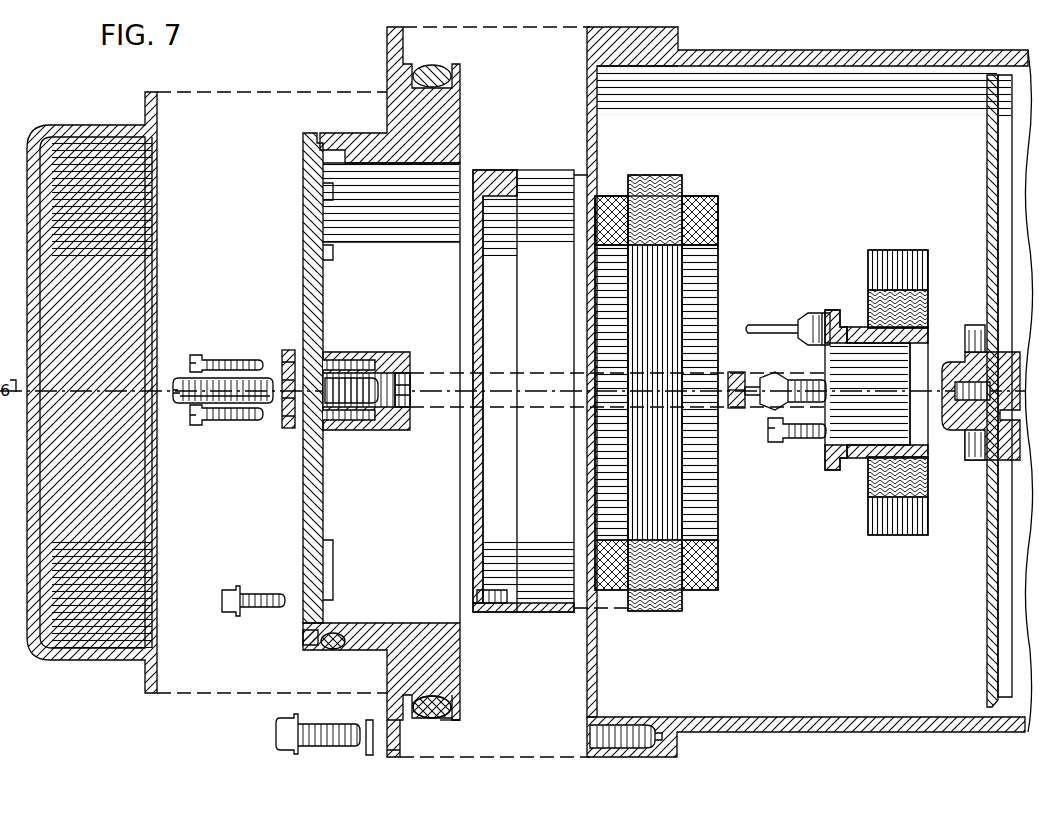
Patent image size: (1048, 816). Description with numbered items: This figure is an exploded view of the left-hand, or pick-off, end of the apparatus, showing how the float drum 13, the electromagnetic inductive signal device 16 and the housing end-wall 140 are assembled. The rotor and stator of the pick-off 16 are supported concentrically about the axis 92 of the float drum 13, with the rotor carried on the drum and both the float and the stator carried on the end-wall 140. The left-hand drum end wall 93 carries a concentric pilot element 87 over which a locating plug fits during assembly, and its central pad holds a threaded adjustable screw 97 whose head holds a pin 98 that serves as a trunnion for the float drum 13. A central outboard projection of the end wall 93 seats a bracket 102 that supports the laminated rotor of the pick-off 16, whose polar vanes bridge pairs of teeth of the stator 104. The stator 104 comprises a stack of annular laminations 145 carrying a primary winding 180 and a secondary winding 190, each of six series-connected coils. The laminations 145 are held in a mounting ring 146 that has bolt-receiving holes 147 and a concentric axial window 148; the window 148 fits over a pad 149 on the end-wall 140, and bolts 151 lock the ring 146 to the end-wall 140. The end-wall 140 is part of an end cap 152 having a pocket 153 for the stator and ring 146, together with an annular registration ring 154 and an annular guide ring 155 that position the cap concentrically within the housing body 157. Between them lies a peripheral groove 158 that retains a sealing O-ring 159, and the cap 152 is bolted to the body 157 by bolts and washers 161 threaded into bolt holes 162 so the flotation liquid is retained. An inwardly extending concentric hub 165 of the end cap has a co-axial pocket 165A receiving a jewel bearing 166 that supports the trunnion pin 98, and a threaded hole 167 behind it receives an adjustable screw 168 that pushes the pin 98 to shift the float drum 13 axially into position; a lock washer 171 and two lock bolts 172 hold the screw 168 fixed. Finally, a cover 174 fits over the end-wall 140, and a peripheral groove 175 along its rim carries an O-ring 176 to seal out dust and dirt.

The float drum 13 is at (984, 185).
The electromagnetic inductive signal device 16 is at (754, 279).
The pilot element 87 is at (990, 460).
The axis of the gyro float drum 92 is at (830, 440).
The left-hand drum end wall 93 is at (987, 248).
The threaded adjustable screw 97 is at (778, 405).
The pin 98 is at (760, 382).
The bracket 102 is at (845, 405).
The stator 104 is at (697, 180).
The housing end-wall 140 is at (387, 124).
The annular laminations 145 is at (650, 612).
The mounting ring 146 is at (510, 613).
The bolt-receiving holes 147 is at (480, 605).
The concentric axial window 148 is at (473, 505).
The pad 149 is at (303, 498).
The bolts 151 is at (262, 585).
The end cap 152 is at (361, 666).
The pocket 153 is at (323, 540).
The annular registration ring 154 is at (392, 758).
The annular guide ring 155 is at (458, 708).
The housing body 157 is at (742, 732).
The peripheral groove 158 is at (452, 722).
The sealing O-ring 159 is at (430, 718).
The bolts and washers 161 is at (285, 720).
The bolt holes 162 is at (592, 737).
The concentric hub 165 is at (388, 353).
The co-axial pocket 165A is at (412, 381).
The jewel bearing 166 is at (738, 372).
The threaded hole 167 is at (305, 430).
The adjustable screw 168 is at (185, 405).
The lock washer 171 is at (287, 352).
The lock bolts 172 is at (197, 360).
The cover 174 is at (38, 445).
The peripheral groove 175 is at (316, 638).
The O-ring 176 is at (322, 648).
The primary winding 180 is at (718, 220).
The secondary winding 190 is at (683, 220).